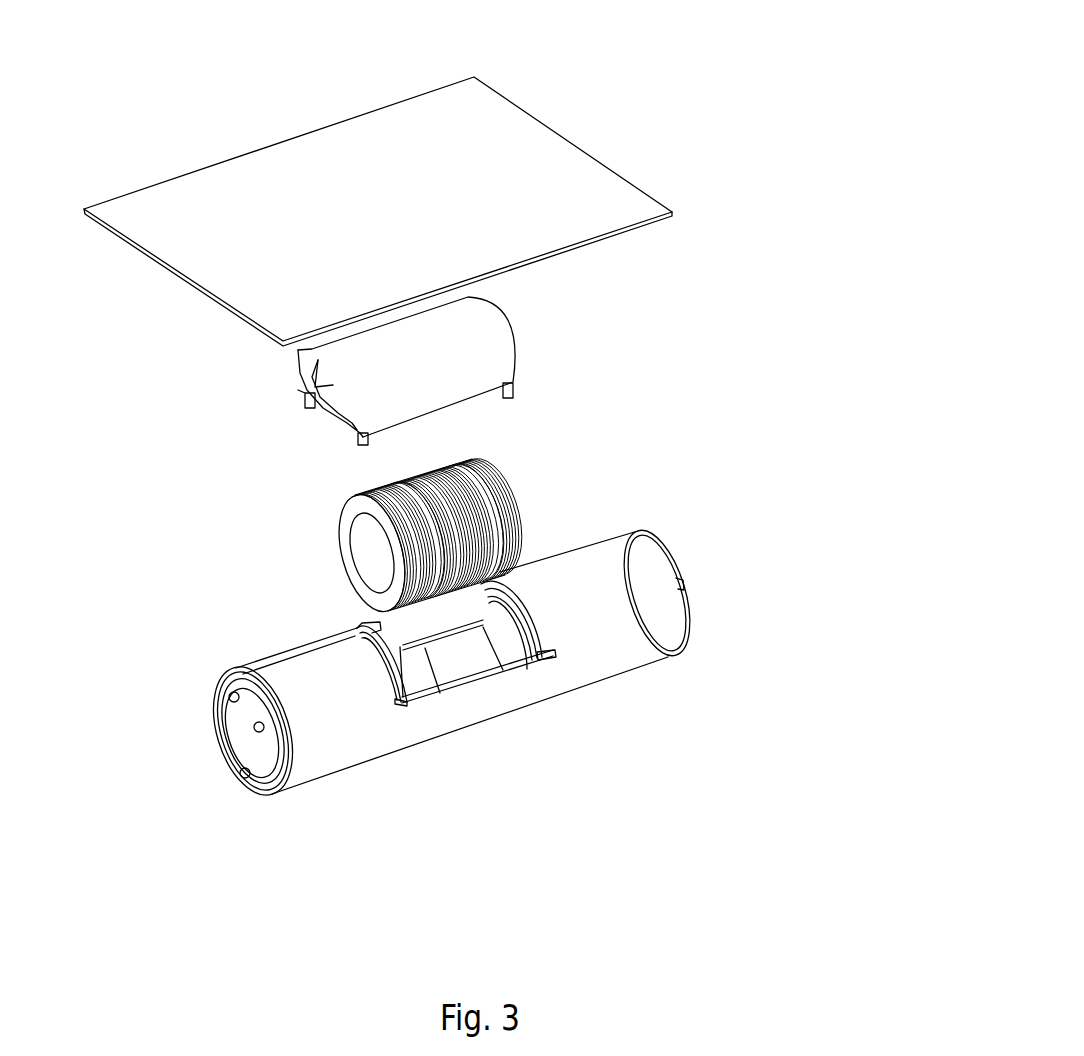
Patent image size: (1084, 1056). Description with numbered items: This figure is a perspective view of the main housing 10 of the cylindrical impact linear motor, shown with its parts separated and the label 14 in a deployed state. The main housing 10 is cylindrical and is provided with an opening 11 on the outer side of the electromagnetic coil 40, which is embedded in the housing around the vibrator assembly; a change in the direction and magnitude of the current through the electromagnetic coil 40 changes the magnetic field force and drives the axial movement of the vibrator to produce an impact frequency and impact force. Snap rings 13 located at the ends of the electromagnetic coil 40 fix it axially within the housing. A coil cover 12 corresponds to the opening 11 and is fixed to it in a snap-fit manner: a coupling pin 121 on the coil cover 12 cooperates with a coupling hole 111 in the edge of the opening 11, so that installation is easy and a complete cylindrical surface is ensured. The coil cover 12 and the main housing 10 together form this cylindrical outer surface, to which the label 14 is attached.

The main housing 10 is at (495, 704).
The opening 11 is at (355, 615).
The coupling hole 111 is at (555, 655).
The coil cover 12 is at (293, 380).
The coupling pin 121 is at (355, 447).
The snap ring 13 is at (415, 700).
The label 14 is at (575, 216).
The electromagnetic coil 40 is at (533, 500).